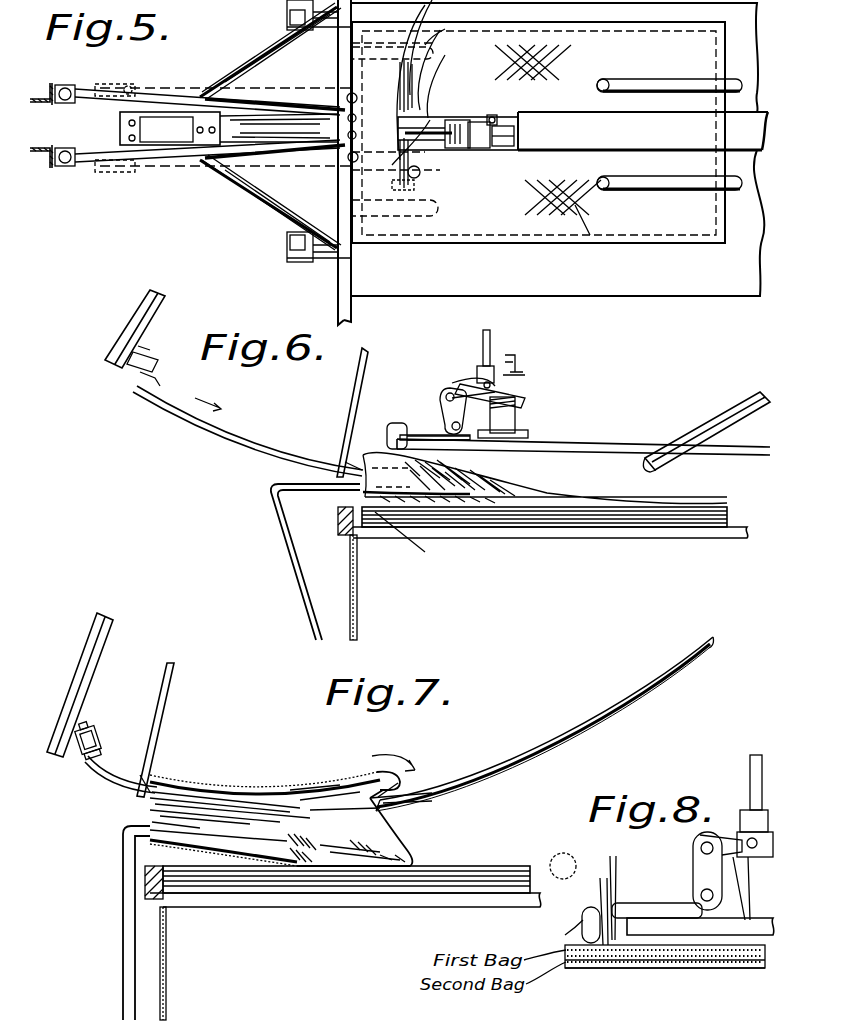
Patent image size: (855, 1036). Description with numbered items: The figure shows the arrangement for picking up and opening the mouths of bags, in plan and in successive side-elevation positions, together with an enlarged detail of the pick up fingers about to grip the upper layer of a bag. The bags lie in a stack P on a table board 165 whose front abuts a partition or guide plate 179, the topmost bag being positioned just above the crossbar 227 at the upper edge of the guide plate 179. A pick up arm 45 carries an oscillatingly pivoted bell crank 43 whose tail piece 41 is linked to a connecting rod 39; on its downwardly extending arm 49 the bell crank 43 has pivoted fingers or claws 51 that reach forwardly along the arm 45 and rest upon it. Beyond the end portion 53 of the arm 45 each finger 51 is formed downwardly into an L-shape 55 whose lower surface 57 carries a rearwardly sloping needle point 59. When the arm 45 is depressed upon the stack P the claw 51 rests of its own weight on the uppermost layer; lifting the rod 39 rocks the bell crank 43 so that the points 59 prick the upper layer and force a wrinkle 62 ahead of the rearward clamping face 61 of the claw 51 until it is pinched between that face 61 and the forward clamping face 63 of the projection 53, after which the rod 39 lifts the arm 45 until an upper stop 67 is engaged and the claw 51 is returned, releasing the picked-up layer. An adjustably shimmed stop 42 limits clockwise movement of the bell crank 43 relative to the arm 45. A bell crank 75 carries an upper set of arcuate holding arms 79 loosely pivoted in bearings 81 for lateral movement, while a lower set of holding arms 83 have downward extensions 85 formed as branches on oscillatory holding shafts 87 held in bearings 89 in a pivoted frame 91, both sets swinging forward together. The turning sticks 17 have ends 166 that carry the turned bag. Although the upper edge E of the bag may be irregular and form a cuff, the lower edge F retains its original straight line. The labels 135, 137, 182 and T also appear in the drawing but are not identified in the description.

In FIG. 5, the turning sticks 17 is at (668, 79).
In FIG. 6, the turning sticks 17 is at (716, 424).
In FIG. 7, the turning sticks 17 is at (600, 718).
In FIG. 5, the connecting rod 39 is at (492, 115).
In FIG. 6, the connecting rod 39 is at (483, 336).
In FIG. 8, the connecting rod 39 is at (752, 764).
In FIG. 5, the tail piece 41 is at (500, 150).
In FIG. 6, the tail piece 41 is at (520, 398).
In FIG. 8, the tail piece 41 is at (748, 885).
In FIG. 5, the adjustably shimmed stop 42 is at (510, 118).
In FIG. 6, the adjustably shimmed stop 42 is at (516, 420).
In FIG. 5, the bell crank 43 is at (478, 120).
In FIG. 6, the bell crank 43 is at (460, 385).
In FIG. 8, the bell crank 43 is at (716, 838).
In FIG. 5, the pick up arm 45 is at (666, 138).
In FIG. 6, the pick up arm 45 is at (714, 454).
In FIG. 8, the pick up arm 45 is at (764, 920).
In FIG. 5, the downwardly extending arm 49 is at (455, 120).
In FIG. 6, the downwardly extending arm 49 is at (445, 407).
In FIG. 8, the downwardly extending arm 49 is at (695, 874).
In FIG. 5, the fingers 51 is at (440, 140).
In FIG. 6, the fingers 51 is at (415, 435).
In FIG. 8, the fingers 51 is at (645, 903).
In FIG. 6, the end portion 53 is at (448, 444).
In FIG. 8, the end portion 53 is at (668, 964).
In FIG. 5, the L-shaped extension 55 is at (392, 186).
In FIG. 6, the L-shaped extension 55 is at (390, 428).
In FIG. 8, the L-shaped extension 55 is at (574, 932).
In FIG. 8, the lower surface 57 is at (565, 936).
In FIG. 8, the needle point 59 is at (588, 915).
In FIG. 8, the rearward clamping face 61 is at (602, 906).
In FIG. 5, the wrinkle 62 is at (420, 176).
In FIG. 8, the wrinkle 62 is at (614, 900).
In FIG. 8, the forward clamping face 63 is at (730, 965).
In FIG. 6, the upper stop 67 is at (520, 360).
In FIG. 5, the bell crank 75 is at (42, 104).
In FIG. 6, the bell crank 75 is at (137, 312).
In FIG. 7, the bell crank 75 is at (88, 648).
In FIG. 5, the upper holding arms 79 is at (150, 86).
In FIG. 6, the upper holding arms 79 is at (196, 428).
In FIG. 7, the upper holding arms 79 is at (121, 790).
In FIG. 5, the bearings 81 is at (65, 87).
In FIG. 6, the bearings 81 is at (160, 368).
In FIG. 7, the bearings 81 is at (82, 728).
In FIG. 5, the lower holding arms 83 is at (245, 78).
In FIG. 6, the lower holding arms 83 is at (306, 492).
In FIG. 7, the lower holding arms 83 is at (143, 834).
In FIG. 5, the downward extensions 85 is at (258, 52).
In FIG. 5, the holding shafts 87 is at (300, 22).
In FIG. 5, the bearings 89 is at (287, 12).
In FIG. 5, the frame 91 is at (356, 27).
In FIG. 5, the rod 135 is at (325, 98).
In FIG. 6, the rod 135 is at (352, 382).
In FIG. 7, the rod 135 is at (163, 732).
In FIG. 5, the brush 137 is at (399, 95).
In FIG. 6, the brush 137 is at (345, 462).
In FIG. 7, the brush 137 is at (140, 776).
In FIG. 5, the table board 165 is at (646, 286).
In FIG. 6, the table board 165 is at (478, 538).
In FIG. 7, the table board 165 is at (243, 900).
In FIG. 5, the ends of turning sticks 166 is at (602, 79).
In FIG. 6, the ends of turning sticks 166 is at (653, 468).
In FIG. 7, the ends of turning sticks 166 is at (392, 808).
In FIG. 5, the guide plate 179 is at (352, 302).
In FIG. 6, the guide plate 179 is at (358, 570).
In FIG. 7, the guide plate 179 is at (167, 976).
In FIG. 5, the bag edge 182 is at (435, 41).
In FIG. 5, the crossbar 227 is at (337, 300).
In FIG. 6, the crossbar 227 is at (344, 536).
In FIG. 7, the crossbar 227 is at (145, 891).
In FIG. 5, the upper edge of the bag E is at (415, 40).
In FIG. 6, the upper edge of the bag E is at (360, 450).
In FIG. 5, the lower edge of the bag F is at (409, 98).
In FIG. 6, the lower edge of the bag F is at (407, 541).
In FIG. 5, the stack of bags P is at (450, 242).
In FIG. 6, the stack of bags P is at (582, 527).
In FIG. 7, the stack of bags P is at (437, 872).
In FIG. 8, the stack of bags P is at (620, 968).
In FIG. 5, the bag T is at (594, 216).
In FIG. 6, the bag T is at (551, 486).
In FIG. 7, the bag T is at (274, 772).